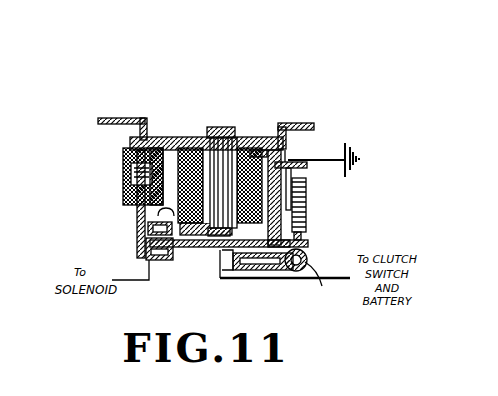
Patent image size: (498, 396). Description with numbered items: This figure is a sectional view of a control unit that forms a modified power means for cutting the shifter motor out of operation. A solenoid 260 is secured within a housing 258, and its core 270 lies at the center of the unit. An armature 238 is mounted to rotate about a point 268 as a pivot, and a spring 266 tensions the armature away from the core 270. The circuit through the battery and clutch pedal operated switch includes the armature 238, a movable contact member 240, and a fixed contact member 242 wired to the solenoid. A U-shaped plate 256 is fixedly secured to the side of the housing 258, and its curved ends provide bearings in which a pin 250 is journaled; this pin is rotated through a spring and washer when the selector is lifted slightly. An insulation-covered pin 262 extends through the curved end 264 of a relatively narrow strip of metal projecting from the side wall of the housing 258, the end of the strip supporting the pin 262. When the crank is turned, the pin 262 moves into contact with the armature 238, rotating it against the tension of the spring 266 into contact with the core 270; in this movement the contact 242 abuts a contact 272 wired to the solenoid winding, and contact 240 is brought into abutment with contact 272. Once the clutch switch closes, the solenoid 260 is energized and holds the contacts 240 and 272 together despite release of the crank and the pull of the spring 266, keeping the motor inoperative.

The armature 238 is at (212, 250).
The movable contact member 240 is at (148, 240).
The fixed contact member 242 is at (146, 256).
The pin 250 is at (307, 254).
The U-shaped plate 256 is at (292, 216).
The housing 258 is at (306, 200).
The solenoid 260 is at (258, 138).
The insulation-covered pin 262 is at (243, 270).
The curved end 264 is at (318, 272).
The spring 266 is at (303, 180).
The pivot point 268 is at (281, 278).
The core 270 is at (224, 175).
The contact 272 is at (137, 232).